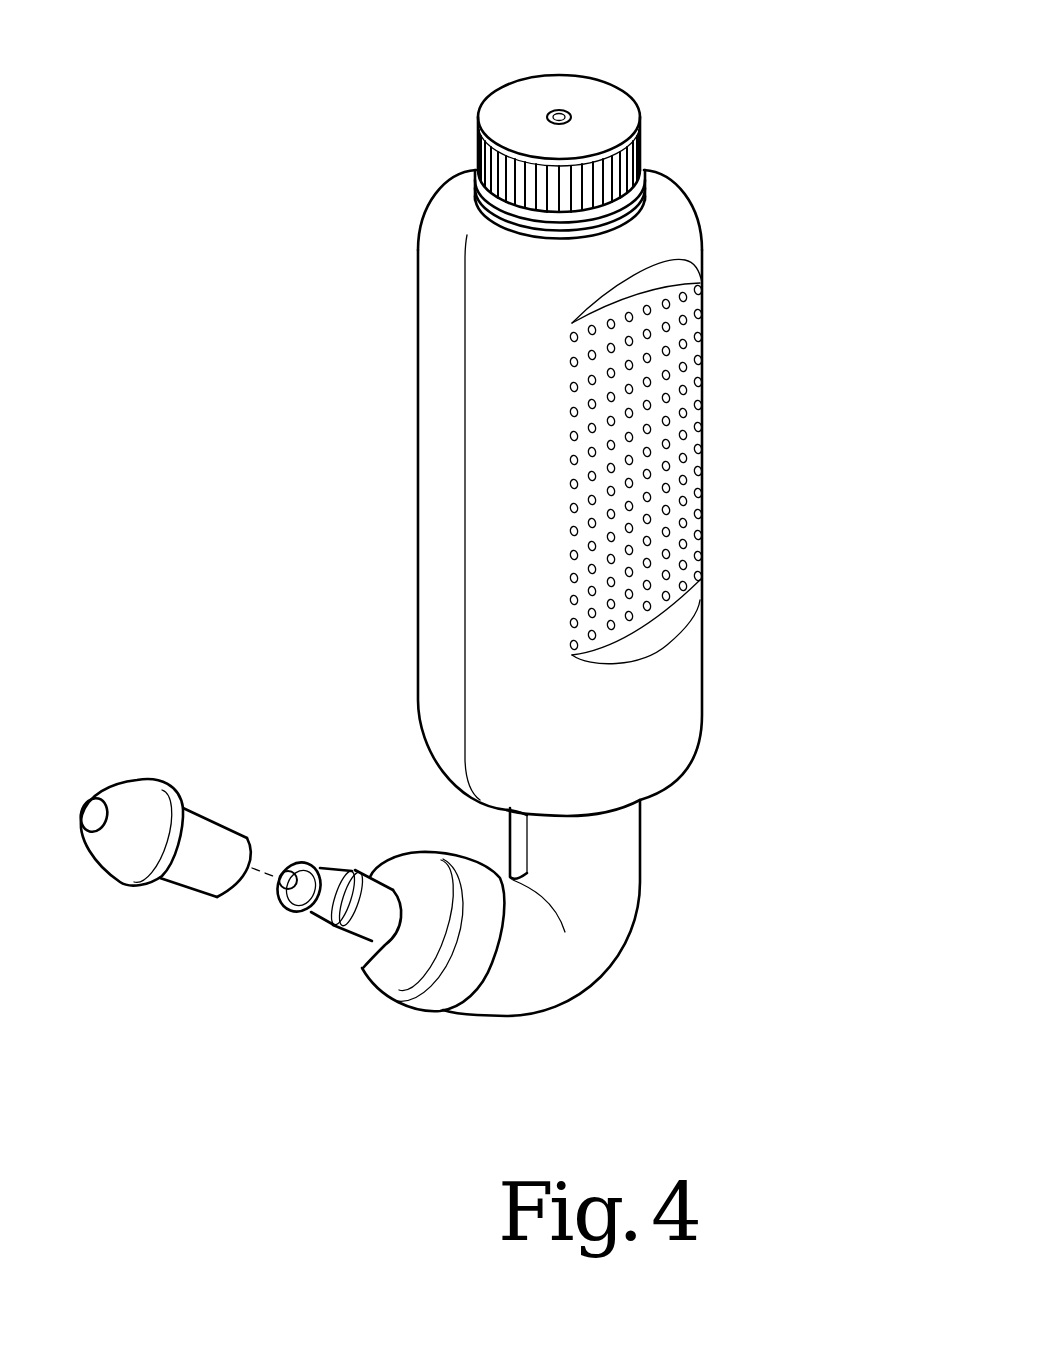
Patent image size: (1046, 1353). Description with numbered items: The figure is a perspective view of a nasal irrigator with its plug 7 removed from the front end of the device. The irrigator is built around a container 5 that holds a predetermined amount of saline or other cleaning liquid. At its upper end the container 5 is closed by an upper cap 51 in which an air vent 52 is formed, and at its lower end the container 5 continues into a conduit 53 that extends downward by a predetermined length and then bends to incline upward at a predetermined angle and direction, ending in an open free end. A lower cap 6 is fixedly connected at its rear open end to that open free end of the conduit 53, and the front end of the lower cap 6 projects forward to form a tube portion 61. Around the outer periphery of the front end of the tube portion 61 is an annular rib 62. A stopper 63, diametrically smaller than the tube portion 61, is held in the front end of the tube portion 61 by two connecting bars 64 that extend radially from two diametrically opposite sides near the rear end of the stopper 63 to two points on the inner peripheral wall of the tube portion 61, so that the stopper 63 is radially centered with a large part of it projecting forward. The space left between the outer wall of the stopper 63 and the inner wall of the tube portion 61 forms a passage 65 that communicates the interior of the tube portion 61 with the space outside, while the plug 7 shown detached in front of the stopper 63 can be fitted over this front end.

The container 5 is at (693, 677).
The upper cap 51 is at (640, 152).
The air vent 52 is at (563, 113).
The conduit 53 is at (612, 940).
The lower cap 6 is at (463, 988).
The tube portion 61 is at (367, 920).
The annular rib 62 is at (307, 905).
The stopper 63 is at (280, 890).
The connecting bars 64 is at (298, 872).
The passage 65 is at (323, 868).
The plug 7 is at (118, 868).